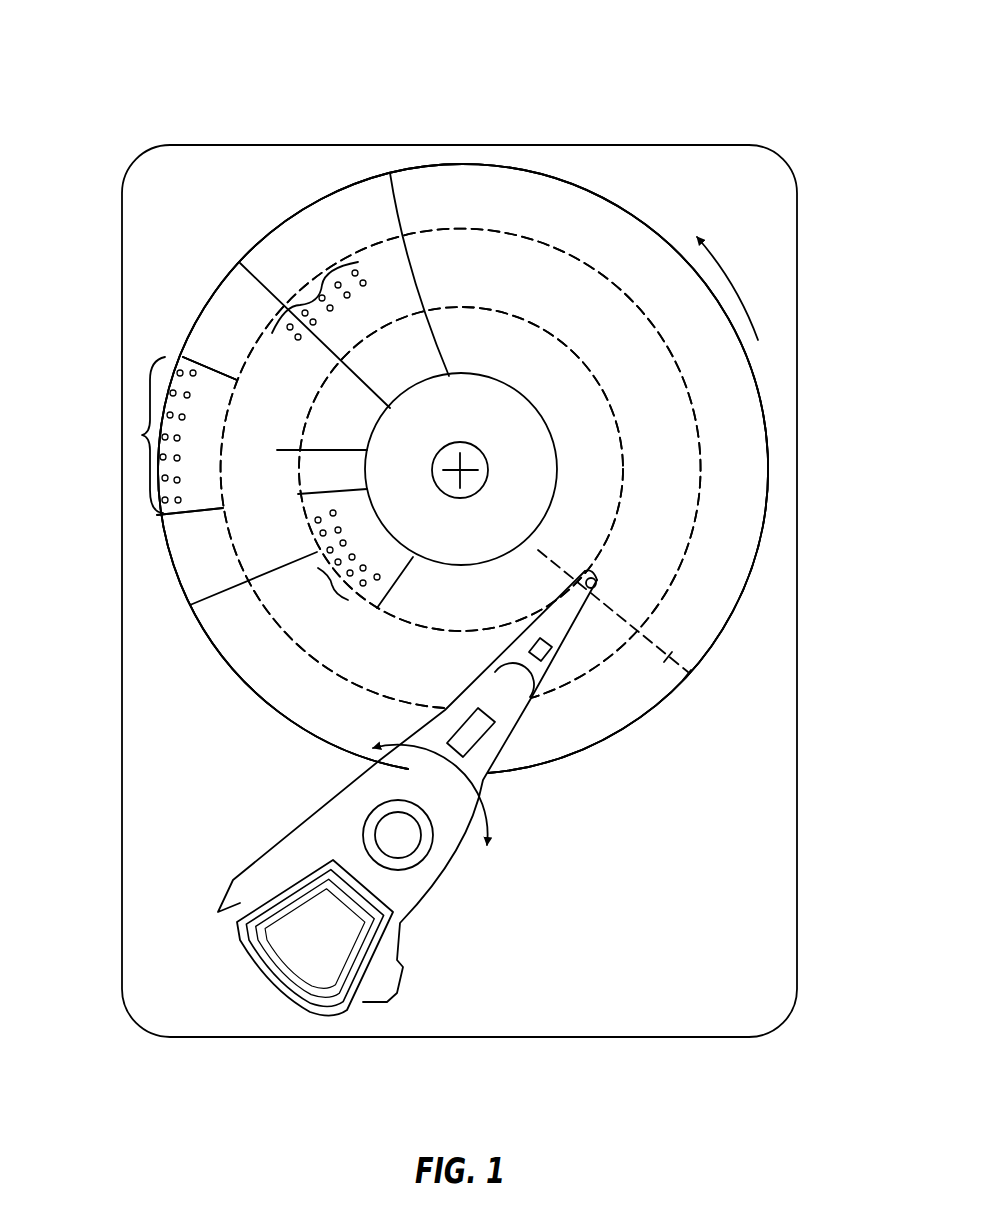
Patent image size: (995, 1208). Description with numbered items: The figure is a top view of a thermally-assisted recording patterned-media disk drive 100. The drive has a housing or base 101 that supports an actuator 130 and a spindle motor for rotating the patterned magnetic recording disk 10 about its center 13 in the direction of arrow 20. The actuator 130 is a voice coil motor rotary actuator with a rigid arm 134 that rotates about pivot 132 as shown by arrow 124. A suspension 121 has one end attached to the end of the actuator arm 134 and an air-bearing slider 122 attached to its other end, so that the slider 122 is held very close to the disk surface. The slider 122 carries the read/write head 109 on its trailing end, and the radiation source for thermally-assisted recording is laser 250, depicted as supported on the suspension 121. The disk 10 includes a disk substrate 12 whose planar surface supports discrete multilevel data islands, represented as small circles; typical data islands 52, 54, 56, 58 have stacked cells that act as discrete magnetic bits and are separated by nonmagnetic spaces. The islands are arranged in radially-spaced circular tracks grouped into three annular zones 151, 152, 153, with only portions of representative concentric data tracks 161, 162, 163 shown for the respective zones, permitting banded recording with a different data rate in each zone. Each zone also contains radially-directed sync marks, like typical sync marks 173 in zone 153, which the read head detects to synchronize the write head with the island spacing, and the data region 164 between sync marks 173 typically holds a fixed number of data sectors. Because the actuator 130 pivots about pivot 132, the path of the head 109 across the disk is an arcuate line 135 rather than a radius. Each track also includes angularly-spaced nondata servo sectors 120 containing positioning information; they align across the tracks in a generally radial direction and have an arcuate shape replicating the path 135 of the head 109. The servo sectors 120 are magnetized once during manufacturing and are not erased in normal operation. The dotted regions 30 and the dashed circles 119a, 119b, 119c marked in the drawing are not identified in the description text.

The patterned-media disk drive 100 is at (122, 56).
The housing or base 101 is at (718, 146).
The patterned magnetic recording disk 10 is at (317, 230).
The disk substrate 12 is at (753, 378).
The disk center 13 is at (462, 465).
The disk rotation direction arrow 20 is at (727, 268).
The servo pattern regions 30 is at (330, 308).
The data island 52 is at (178, 500).
The data island 54 is at (177, 480).
The data island 56 is at (177, 458).
The data island 58 is at (177, 438).
The read/write head 109 is at (597, 578).
The inner zone boundary track 119a is at (483, 320).
The middle zone boundary track 119b is at (513, 243).
The outer zone boundary track 119c is at (606, 214).
The servo sectors 120 is at (402, 213).
The suspension 121 is at (512, 667).
The air-bearing slider 122 is at (594, 589).
The actuator rotation arrow 124 is at (487, 813).
The actuator 130 is at (228, 893).
The pivot 132 is at (385, 830).
The rigid arm 134 is at (465, 707).
The arcuate line 135 is at (670, 657).
The annular zone 151 is at (602, 431).
The annular zone 152 is at (677, 453).
The annular zone 153 is at (748, 468).
The concentric data track 161 is at (310, 587).
The concentric data track 162 is at (312, 283).
The concentric data track 163 is at (161, 452).
The data region 164 is at (190, 355).
The sync marks 173 is at (200, 367).
The laser 250 is at (551, 656).